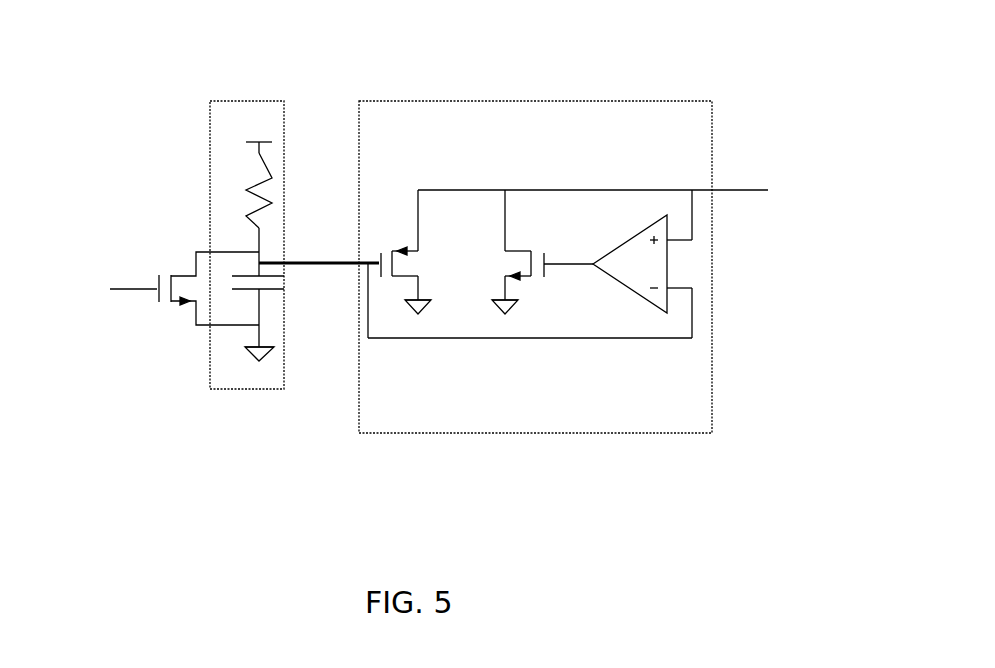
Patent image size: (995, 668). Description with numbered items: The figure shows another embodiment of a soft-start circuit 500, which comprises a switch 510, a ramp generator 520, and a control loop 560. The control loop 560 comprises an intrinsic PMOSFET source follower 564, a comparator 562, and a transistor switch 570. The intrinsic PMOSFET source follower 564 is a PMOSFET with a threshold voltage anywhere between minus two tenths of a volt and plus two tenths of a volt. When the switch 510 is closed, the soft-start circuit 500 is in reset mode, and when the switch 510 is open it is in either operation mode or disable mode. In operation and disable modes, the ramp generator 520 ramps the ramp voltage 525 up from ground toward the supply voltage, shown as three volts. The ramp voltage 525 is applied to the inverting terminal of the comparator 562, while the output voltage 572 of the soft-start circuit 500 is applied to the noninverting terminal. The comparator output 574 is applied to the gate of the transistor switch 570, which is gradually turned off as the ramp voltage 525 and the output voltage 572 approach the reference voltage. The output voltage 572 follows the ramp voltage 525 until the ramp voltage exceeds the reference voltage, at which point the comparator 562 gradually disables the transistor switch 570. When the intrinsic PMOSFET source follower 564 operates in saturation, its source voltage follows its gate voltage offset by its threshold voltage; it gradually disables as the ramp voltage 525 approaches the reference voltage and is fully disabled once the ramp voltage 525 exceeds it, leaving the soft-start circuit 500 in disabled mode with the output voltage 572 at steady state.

The soft-start circuit 500 is at (68, 30).
The switch 510 is at (178, 243).
The ramp generator 520 is at (254, 92).
The ramp voltage 525 is at (338, 312).
The control loop 560 is at (527, 93).
The comparator 562 is at (620, 290).
The intrinsic PMOSFET source follower 564 is at (407, 240).
The transistor switch 570 is at (503, 262).
The output voltage 572 is at (794, 170).
The comparator output 574 is at (570, 230).